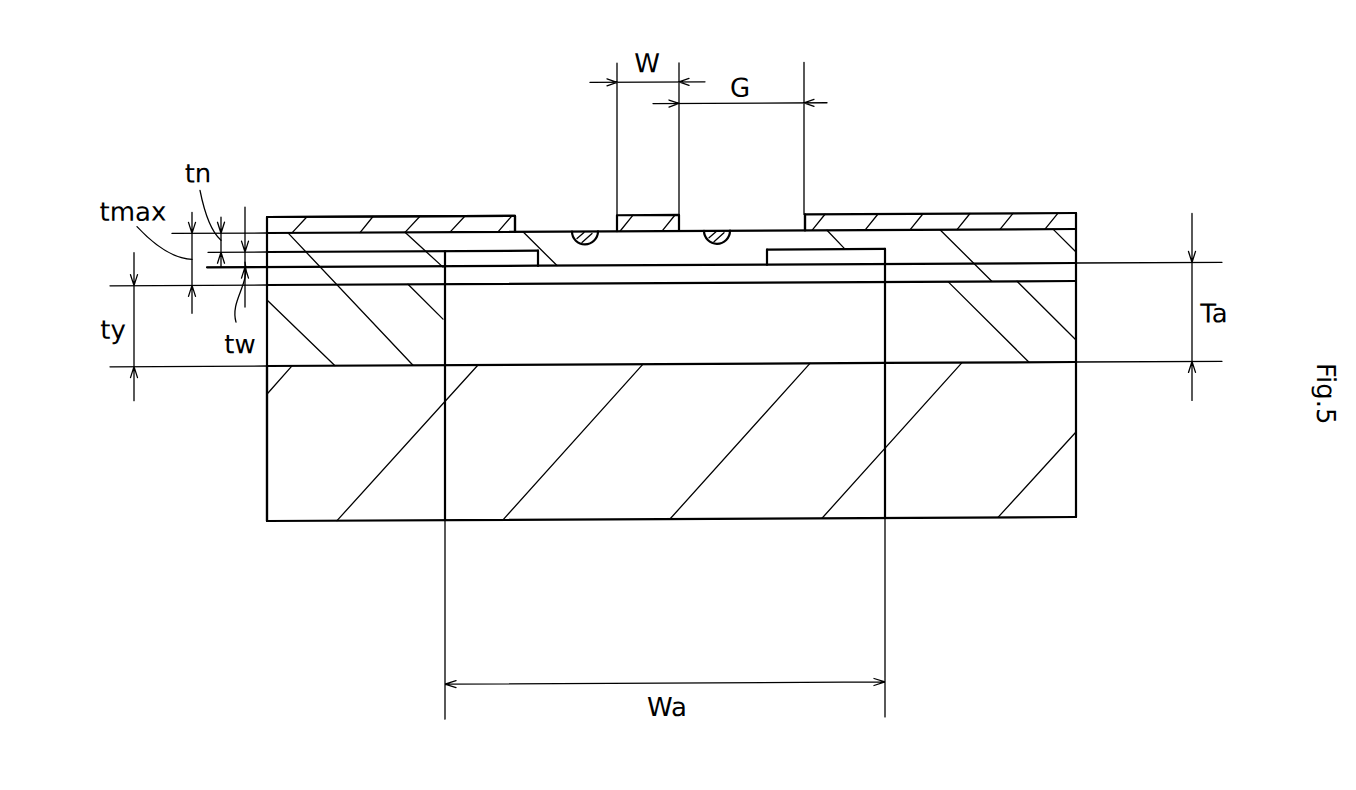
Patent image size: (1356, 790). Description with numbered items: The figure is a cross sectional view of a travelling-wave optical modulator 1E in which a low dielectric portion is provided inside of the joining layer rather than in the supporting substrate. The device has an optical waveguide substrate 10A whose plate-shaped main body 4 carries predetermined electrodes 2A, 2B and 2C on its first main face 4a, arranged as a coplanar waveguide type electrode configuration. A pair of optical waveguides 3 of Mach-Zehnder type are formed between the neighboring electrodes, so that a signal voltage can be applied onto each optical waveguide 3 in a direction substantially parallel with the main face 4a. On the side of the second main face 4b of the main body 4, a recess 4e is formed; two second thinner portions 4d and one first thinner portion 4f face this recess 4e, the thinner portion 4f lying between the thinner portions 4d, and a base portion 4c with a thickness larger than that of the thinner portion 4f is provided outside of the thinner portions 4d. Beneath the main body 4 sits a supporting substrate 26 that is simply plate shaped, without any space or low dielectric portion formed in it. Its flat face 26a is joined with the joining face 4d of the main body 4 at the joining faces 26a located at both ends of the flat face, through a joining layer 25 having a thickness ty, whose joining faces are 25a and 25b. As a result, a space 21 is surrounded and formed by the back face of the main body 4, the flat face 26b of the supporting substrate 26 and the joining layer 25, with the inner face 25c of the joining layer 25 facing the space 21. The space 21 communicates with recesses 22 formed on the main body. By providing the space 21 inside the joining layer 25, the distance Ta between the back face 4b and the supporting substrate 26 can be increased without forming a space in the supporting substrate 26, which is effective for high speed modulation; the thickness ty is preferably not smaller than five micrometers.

The travelling-wave optical modulator 1E is at (1090, 194).
The optical waveguide substrate 10A is at (1098, 224).
The electrode 2A is at (375, 224).
The electrode 2B is at (640, 224).
The electrode 2C is at (850, 225).
The optical waveguide 3 is at (576, 233).
The main body 4 is at (1092, 251).
The first main face 4a is at (912, 233).
The second main face 4b is at (419, 291).
The base portion 4c is at (292, 280).
The second thinner portion 4d is at (463, 245).
The recess 4e is at (512, 255).
The first thinner portion 4f is at (612, 253).
The space 21 is at (638, 342).
The recess 22 is at (807, 267).
The joining layer 25 is at (1065, 338).
The joining face 25a is at (972, 366).
The joining face 25b is at (1076, 284).
The inner face 25c is at (883, 312).
The supporting substrate 26 is at (1091, 428).
The flat face 26a is at (1037, 366).
The flat face 26b is at (847, 366).